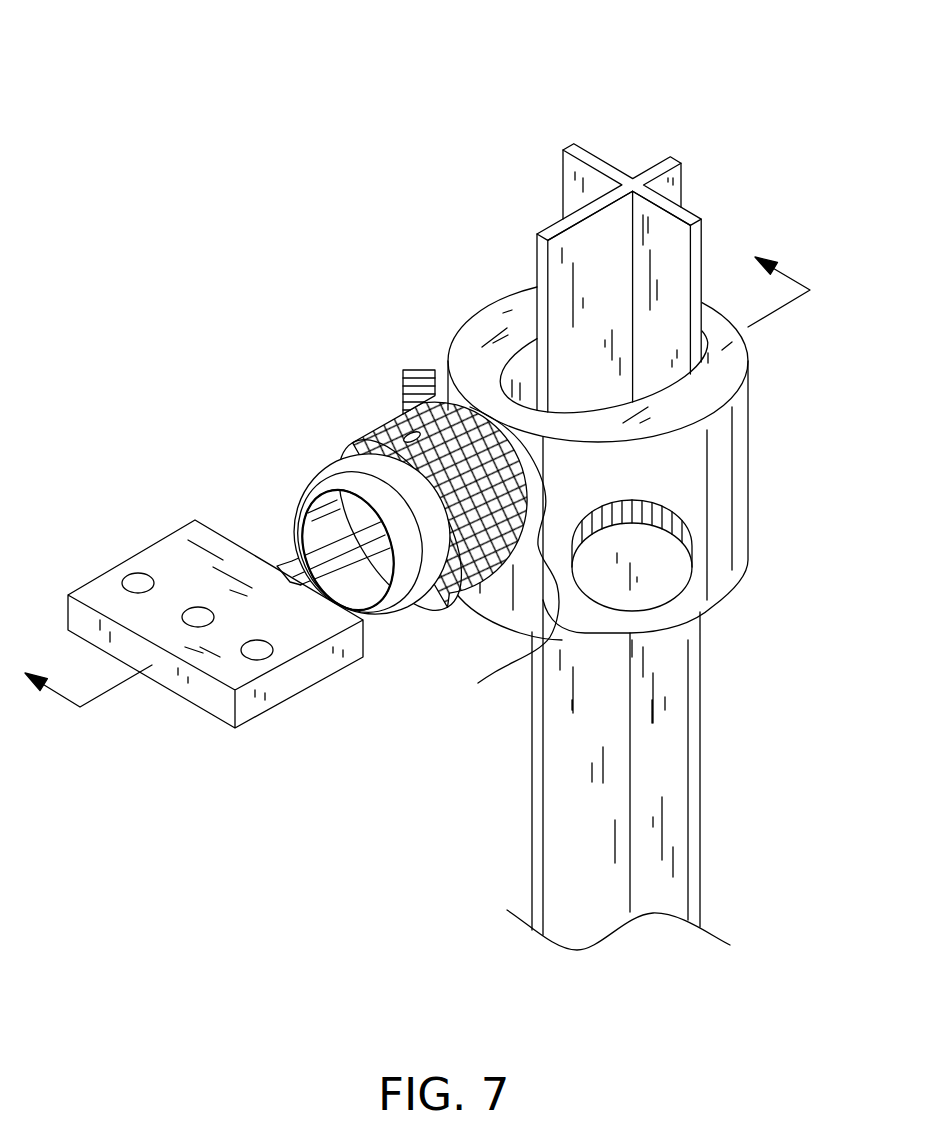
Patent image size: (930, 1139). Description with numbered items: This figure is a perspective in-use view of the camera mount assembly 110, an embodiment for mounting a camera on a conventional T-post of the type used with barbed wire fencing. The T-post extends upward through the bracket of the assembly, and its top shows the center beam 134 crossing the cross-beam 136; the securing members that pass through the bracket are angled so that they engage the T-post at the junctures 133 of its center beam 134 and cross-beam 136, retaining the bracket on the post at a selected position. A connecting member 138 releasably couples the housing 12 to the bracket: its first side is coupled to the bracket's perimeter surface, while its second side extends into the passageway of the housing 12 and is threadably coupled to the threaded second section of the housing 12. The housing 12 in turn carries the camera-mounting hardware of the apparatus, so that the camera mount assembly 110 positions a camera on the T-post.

The camera mount assembly 110 is at (368, 327).
The housing 12 is at (365, 441).
The junctures 133 is at (567, 156).
The center beam 134 is at (537, 232).
The cross-beam 136 is at (621, 164).
The connecting member 138 is at (478, 683).